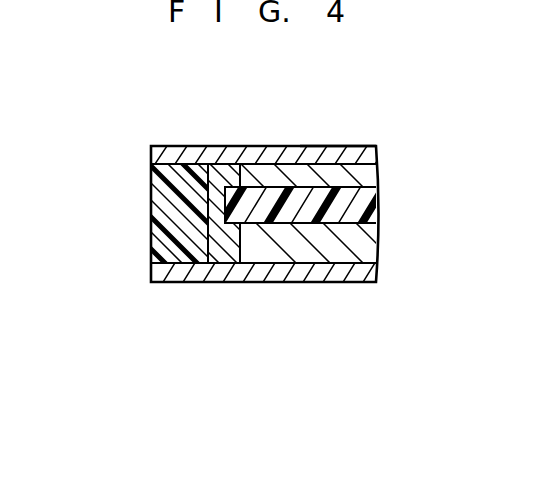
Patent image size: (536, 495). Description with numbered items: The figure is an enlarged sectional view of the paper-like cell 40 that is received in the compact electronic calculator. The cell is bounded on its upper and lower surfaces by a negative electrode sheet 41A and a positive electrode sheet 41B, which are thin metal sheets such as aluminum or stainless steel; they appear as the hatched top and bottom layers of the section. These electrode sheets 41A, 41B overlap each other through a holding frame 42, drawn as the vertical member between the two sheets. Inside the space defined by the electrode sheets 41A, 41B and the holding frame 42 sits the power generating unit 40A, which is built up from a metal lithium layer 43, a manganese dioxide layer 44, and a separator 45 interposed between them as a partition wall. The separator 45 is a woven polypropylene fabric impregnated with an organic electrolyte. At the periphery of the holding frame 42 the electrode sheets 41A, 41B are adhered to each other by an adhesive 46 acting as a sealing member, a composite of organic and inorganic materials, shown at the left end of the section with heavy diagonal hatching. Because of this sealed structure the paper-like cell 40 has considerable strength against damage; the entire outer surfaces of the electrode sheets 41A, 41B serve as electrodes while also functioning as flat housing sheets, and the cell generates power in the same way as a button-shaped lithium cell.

The paper-like cell 40 is at (304, 147).
The power generating unit 40A is at (357, 148).
The negative electrode sheet 41A is at (232, 147).
The positive electrode sheet 41B is at (303, 272).
The holding frame 42 is at (228, 256).
The metal lithium layer 43 is at (363, 177).
The manganese dioxide layer 44 is at (373, 240).
The separator 45 is at (373, 207).
The adhesive 46 is at (152, 223).